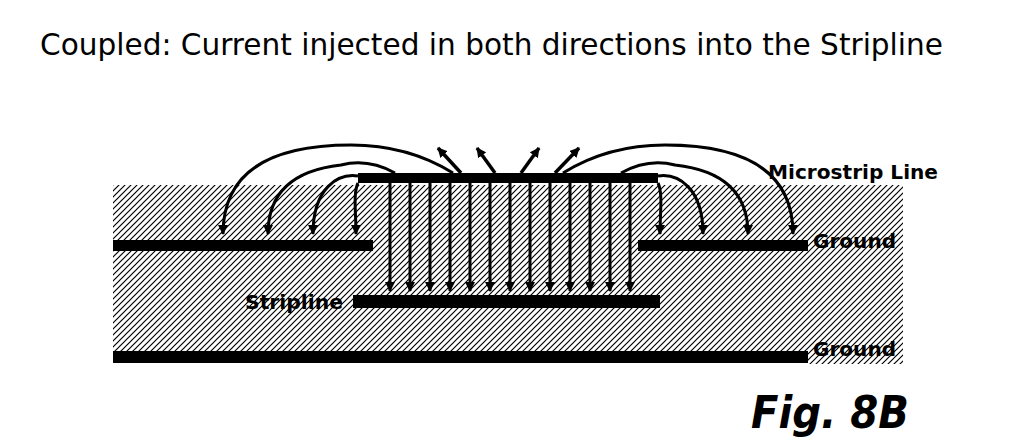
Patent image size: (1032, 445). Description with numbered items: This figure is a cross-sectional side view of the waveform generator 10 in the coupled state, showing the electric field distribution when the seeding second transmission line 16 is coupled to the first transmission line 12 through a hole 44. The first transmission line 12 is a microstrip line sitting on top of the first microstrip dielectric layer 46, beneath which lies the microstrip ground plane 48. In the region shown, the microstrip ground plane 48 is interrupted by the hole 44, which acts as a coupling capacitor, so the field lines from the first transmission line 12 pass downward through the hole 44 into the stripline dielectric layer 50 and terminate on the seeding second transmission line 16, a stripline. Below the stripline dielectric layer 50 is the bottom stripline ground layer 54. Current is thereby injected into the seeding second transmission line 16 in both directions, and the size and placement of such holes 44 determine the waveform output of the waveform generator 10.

The waveform generator 10 is at (183, 151).
The first transmission line 12 is at (497, 163).
The seeding second transmission line 16 is at (481, 300).
The hole 44 is at (631, 255).
The first microstrip dielectric layer 46 is at (105, 190).
The microstrip ground plane 48 is at (105, 238).
The stripline dielectric layer 50 is at (105, 302).
The bottom stripline ground layer 54 is at (105, 348).